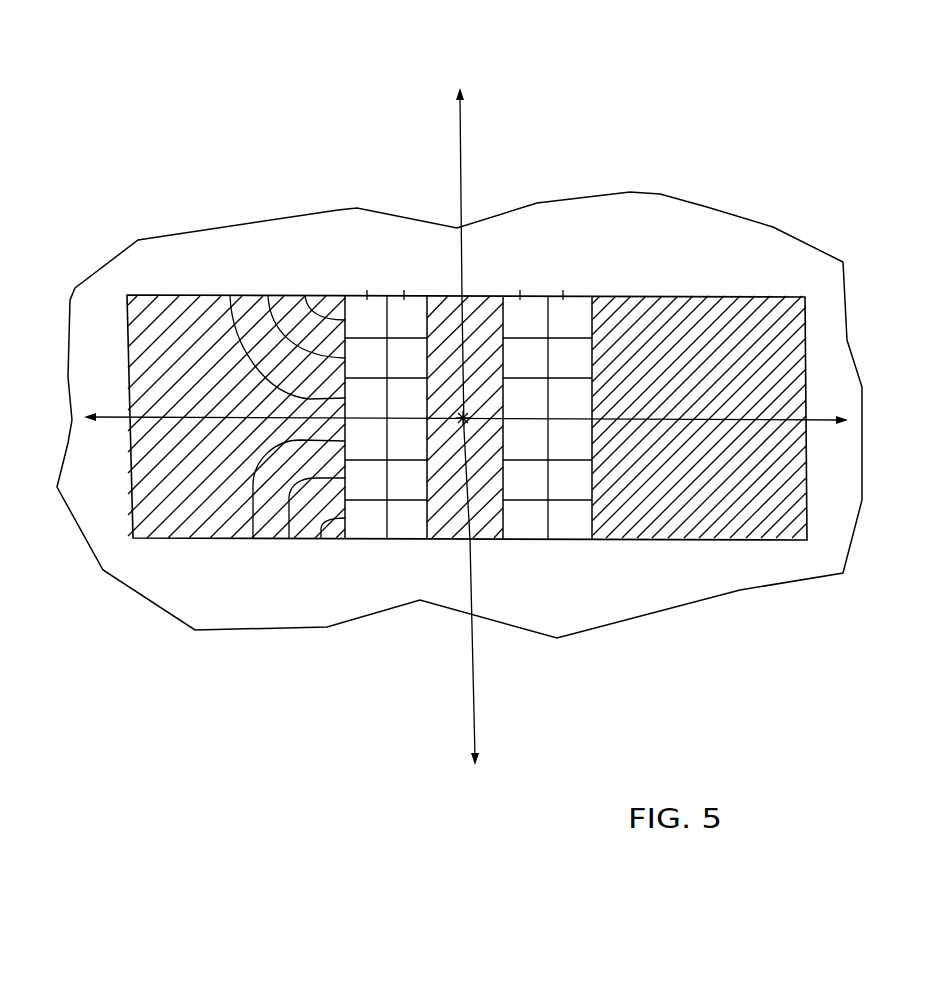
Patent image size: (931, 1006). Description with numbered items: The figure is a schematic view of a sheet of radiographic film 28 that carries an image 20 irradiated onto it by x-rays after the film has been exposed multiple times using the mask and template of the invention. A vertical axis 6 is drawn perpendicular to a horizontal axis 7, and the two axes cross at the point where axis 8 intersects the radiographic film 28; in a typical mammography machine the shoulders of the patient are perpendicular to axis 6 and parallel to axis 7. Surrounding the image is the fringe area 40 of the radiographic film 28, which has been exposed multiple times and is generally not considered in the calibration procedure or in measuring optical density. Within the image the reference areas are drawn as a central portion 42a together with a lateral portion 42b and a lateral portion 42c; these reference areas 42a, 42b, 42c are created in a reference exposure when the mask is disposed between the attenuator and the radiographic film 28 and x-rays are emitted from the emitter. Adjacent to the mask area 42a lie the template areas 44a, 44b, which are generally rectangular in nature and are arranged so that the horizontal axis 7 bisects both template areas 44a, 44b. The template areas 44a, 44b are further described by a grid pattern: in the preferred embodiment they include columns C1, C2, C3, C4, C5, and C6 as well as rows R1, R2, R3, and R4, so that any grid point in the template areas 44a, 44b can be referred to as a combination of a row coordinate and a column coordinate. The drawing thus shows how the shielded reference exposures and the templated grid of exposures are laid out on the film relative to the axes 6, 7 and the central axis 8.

The radiographic film 28 is at (250, 120).
The image 20 is at (128, 295).
The fringe area 40 is at (195, 630).
The axis 8 is at (470, 418).
The central portion 42a is at (457, 297).
The lateral portion 42b is at (623, 297).
The lateral portion 42c is at (338, 296).
The template area 44a is at (423, 540).
The template area 44b is at (565, 540).
The column C1 is at (305, 296).
The column C2 is at (268, 296).
The column C3 is at (230, 296).
The column C4 is at (253, 539).
The column C5 is at (289, 539).
The column C6 is at (321, 539).
The row R1 is at (367, 290).
The row R2 is at (404, 290).
The row R3 is at (520, 290).
The row R4 is at (563, 290).
The axis 6 is at (472, 429).
The axis 7 is at (467, 419).